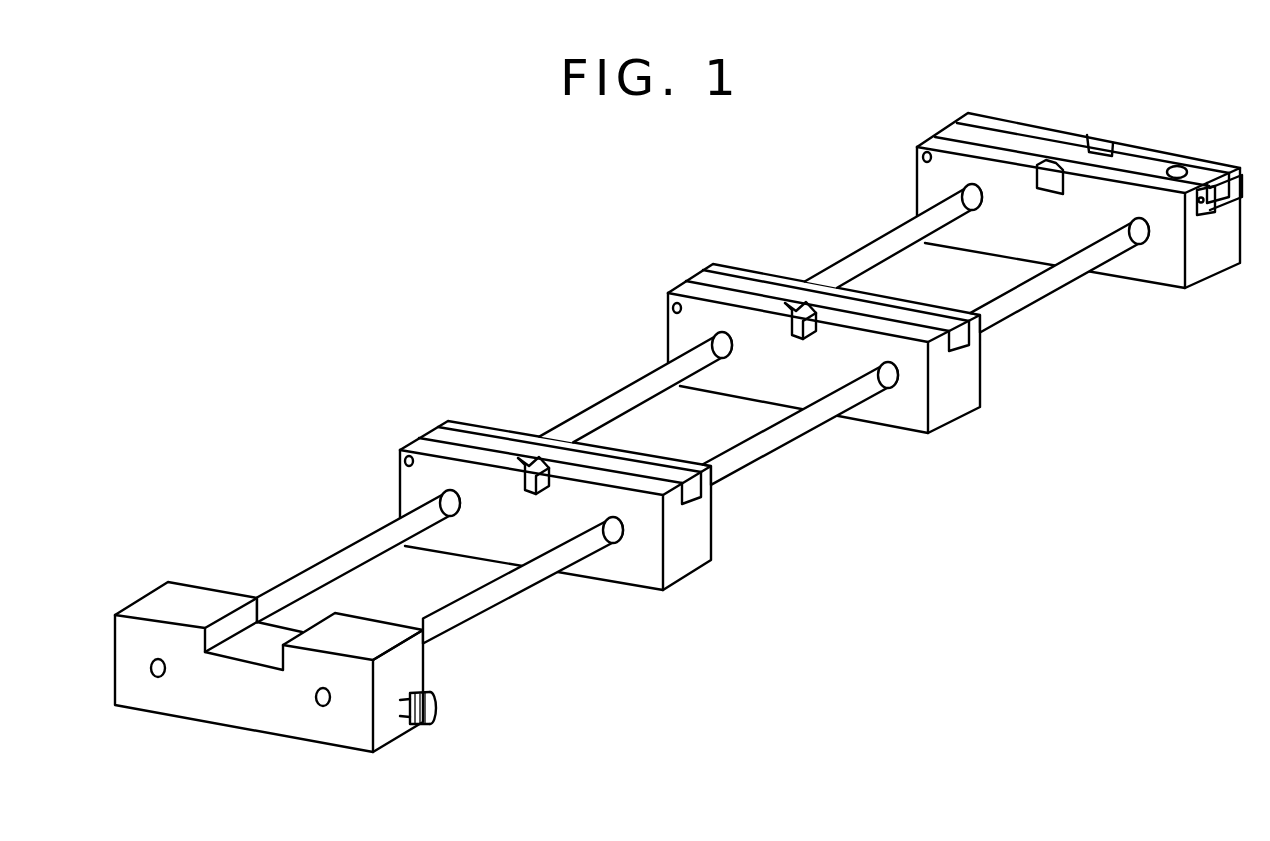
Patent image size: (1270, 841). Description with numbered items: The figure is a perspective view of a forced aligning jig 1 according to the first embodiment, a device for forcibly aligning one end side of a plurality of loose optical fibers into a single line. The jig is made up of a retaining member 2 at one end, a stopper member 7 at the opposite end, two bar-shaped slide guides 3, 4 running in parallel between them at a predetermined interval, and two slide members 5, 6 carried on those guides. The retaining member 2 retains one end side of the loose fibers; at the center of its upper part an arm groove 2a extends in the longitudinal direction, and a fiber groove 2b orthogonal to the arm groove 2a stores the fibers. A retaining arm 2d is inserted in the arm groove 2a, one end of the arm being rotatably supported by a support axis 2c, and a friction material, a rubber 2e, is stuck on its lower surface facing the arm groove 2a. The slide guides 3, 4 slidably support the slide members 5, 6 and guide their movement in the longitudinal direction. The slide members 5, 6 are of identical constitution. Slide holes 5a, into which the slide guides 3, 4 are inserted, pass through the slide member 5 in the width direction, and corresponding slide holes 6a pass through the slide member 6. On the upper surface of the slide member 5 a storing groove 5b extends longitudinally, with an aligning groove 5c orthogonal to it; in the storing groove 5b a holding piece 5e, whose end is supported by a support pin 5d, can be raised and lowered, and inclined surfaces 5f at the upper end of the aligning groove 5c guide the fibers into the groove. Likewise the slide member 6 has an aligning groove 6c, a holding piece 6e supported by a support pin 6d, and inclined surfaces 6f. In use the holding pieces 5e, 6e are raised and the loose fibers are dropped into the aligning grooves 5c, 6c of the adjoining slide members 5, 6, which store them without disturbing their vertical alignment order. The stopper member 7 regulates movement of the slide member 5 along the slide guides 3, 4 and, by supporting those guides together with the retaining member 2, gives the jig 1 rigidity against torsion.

The forced aligning jig 1 is at (553, 231).
The retaining member 2 is at (1013, 112).
The arm groove 2a is at (1186, 235).
The fiber groove 2b is at (1040, 197).
The support axis 2c is at (921, 150).
The retaining arm 2d is at (1097, 150).
The rubber 2e is at (1226, 218).
The slide guide 3 is at (326, 558).
The slide guide 4 is at (1040, 302).
The slide member 5 is at (432, 445).
The slide hole 5a is at (458, 494).
The storing groove 5b is at (680, 495).
The aligning groove 5c is at (523, 503).
The support pin 5d is at (403, 459).
The holding piece 5e is at (531, 466).
The inclined surface 5f is at (521, 462).
The slide member 6 is at (968, 420).
The slide hole 6a is at (725, 333).
The aligning groove 6c is at (787, 350).
The support pin 6d is at (676, 303).
The holding piece 6e is at (801, 308).
The inclined surface 6f is at (787, 302).
The stopper member 7 is at (216, 592).